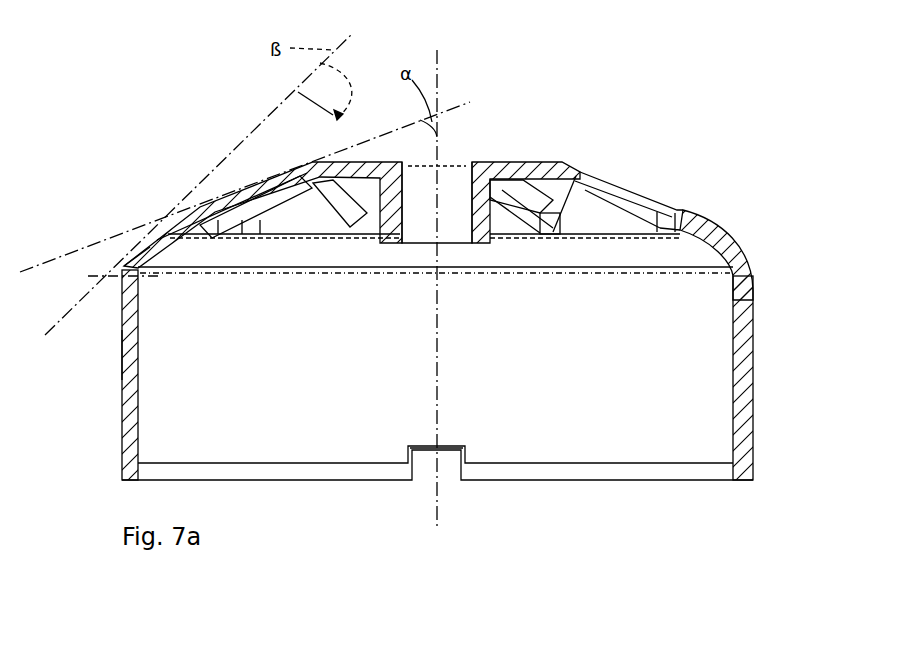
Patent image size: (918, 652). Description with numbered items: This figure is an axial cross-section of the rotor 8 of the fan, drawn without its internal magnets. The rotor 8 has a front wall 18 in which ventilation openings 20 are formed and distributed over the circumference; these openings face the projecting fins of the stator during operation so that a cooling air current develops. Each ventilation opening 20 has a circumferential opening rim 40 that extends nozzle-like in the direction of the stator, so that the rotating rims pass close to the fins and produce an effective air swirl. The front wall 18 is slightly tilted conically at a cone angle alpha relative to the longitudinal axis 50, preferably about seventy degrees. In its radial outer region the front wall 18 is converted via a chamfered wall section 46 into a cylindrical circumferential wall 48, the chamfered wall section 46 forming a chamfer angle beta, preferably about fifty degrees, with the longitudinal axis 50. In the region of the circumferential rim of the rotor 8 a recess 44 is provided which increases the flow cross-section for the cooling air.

The rotor 8 is at (763, 265).
The front wall 18 is at (245, 194).
The ventilation openings 20 is at (280, 216).
The opening rim 40 is at (247, 230).
The recess 44 is at (447, 468).
The chamfered wall section 46 is at (158, 245).
The circumferential wall 48 is at (127, 352).
The longitudinal axis 50 is at (437, 148).